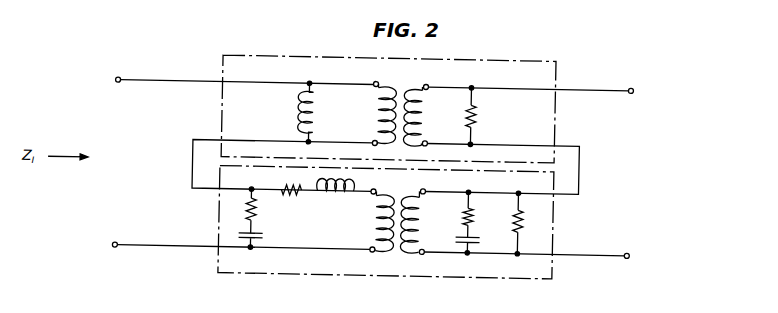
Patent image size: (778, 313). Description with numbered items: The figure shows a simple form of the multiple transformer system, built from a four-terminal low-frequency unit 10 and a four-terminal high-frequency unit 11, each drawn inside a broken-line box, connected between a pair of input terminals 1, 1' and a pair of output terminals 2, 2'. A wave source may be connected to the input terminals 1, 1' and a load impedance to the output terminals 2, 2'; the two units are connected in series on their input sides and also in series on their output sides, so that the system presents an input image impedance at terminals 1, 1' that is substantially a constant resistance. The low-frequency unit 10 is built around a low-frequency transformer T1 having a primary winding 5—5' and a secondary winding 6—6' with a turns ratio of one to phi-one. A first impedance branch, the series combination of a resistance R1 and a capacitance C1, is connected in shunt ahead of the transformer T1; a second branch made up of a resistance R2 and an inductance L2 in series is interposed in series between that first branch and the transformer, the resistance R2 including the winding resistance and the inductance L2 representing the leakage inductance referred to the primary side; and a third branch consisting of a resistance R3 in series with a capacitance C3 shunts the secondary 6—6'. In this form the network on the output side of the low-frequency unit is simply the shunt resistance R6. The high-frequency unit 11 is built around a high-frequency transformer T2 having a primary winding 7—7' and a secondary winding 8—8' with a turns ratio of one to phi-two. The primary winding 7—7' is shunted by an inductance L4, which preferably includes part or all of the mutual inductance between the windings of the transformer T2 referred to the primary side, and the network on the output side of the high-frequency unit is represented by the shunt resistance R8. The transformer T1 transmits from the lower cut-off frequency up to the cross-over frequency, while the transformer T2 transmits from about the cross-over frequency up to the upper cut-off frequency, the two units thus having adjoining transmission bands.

The low-frequency unit 10 is at (287, 270).
The high-frequency unit 11 is at (276, 60).
The input terminal 1 is at (235, 81).
The input terminal 1' is at (231, 245).
The output terminal 2 is at (540, 89).
The output terminal 2' is at (540, 253).
The primary winding terminal 5 is at (368, 184).
The primary winding terminal 5' is at (367, 259).
The secondary winding terminal 6 is at (428, 184).
The secondary winding terminal 6' is at (427, 261).
The primary winding terminal 7 is at (373, 75).
The primary winding terminal 7' is at (369, 149).
The secondary winding terminal 8 is at (428, 76).
The secondary winding terminal 8' is at (430, 151).
The resistance R1 is at (238, 217).
The resistance R2 is at (291, 203).
The resistance R3 is at (476, 222).
The shunt resistance R6 is at (526, 223).
The shunt resistance R8 is at (481, 116).
The capacitance C1 is at (261, 237).
The capacitance C3 is at (474, 242).
The inductance L2 is at (335, 200).
The inductance L4 is at (287, 112).
The low-frequency transformer T1 is at (398, 225).
The high-frequency transformer T2 is at (401, 112).